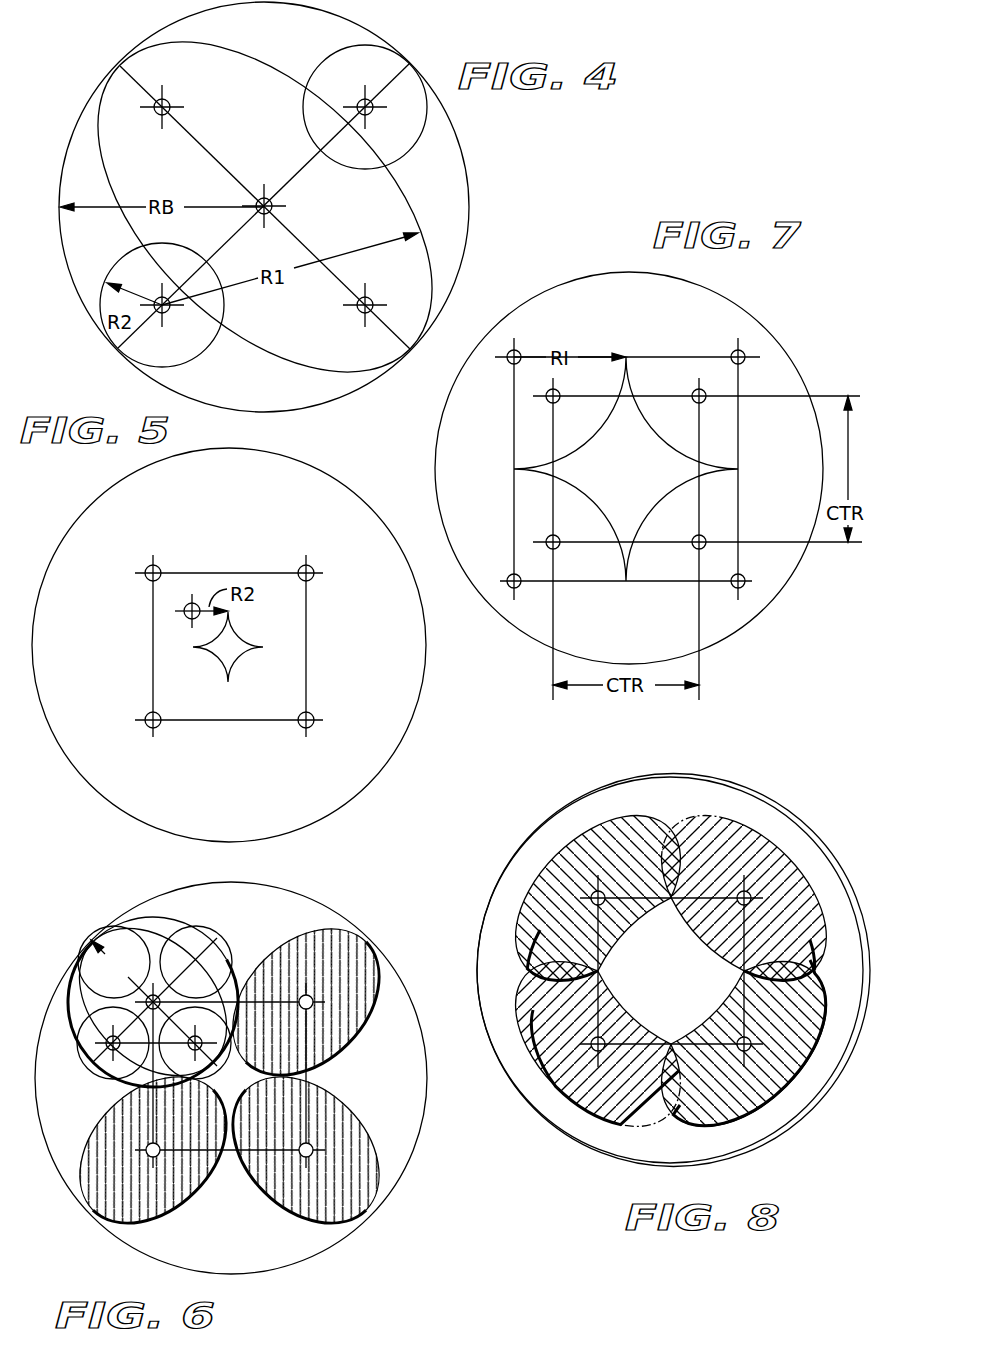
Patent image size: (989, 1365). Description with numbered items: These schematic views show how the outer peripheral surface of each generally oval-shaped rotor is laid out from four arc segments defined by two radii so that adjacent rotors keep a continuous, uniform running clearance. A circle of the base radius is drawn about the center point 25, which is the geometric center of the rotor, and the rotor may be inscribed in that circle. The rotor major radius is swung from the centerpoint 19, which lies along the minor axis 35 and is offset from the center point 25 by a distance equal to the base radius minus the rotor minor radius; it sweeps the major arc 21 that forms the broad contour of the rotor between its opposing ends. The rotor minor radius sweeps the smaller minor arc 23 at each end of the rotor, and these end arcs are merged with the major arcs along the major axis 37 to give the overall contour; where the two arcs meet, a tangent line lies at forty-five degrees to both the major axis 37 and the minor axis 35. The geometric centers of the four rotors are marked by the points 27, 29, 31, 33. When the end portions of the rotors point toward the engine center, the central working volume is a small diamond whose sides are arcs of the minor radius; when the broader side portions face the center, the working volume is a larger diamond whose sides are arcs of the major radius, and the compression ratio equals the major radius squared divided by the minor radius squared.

In FIG. 4, the centerpoint of the rotor major radius 19 is at (263, 206).
In FIG. 4, the major arc 21 is at (406, 206).
In FIG. 4, the minor arc 23 is at (112, 344).
In FIG. 4, the center point 25 is at (265, 199).
In FIG. 7, the geometric center of first rotor 27 is at (554, 403).
In FIG. 5, the geometric center of first rotor 27 is at (153, 565).
In FIG. 6, the geometric center of first rotor 27 is at (188, 936).
In FIG. 8, the geometric center of first rotor 27 is at (627, 867).
In FIG. 7, the geometric center of second rotor 29 is at (572, 515).
In FIG. 5, the geometric center of second rotor 29 is at (157, 729).
In FIG. 6, the geometric center of second rotor 29 is at (147, 1160).
In FIG. 8, the geometric center of second rotor 29 is at (602, 1050).
In FIG. 7, the geometric center of third rotor 31 is at (699, 403).
In FIG. 5, the geometric center of third rotor 31 is at (313, 535).
In FIG. 6, the geometric center of third rotor 31 is at (309, 990).
In FIG. 8, the geometric center of third rotor 31 is at (750, 903).
In FIG. 7, the geometric center of fourth rotor 33 is at (698, 540).
In FIG. 5, the geometric center of fourth rotor 33 is at (301, 731).
In FIG. 6, the geometric center of fourth rotor 33 is at (311, 1160).
In FIG. 8, the geometric center of fourth rotor 33 is at (747, 1050).
In FIG. 4, the minor axis 35 is at (234, 244).
In FIG. 4, the major axis 37 is at (322, 264).